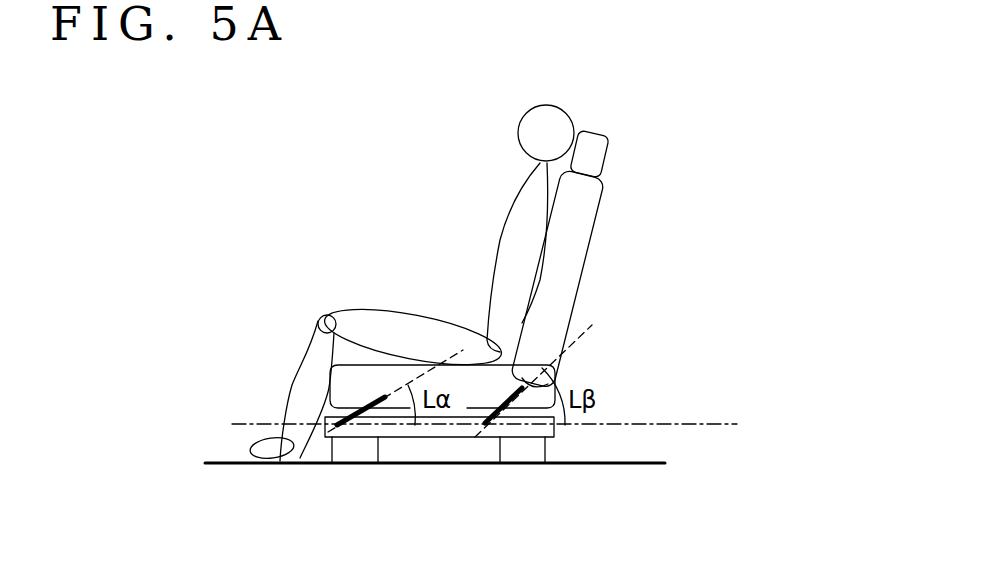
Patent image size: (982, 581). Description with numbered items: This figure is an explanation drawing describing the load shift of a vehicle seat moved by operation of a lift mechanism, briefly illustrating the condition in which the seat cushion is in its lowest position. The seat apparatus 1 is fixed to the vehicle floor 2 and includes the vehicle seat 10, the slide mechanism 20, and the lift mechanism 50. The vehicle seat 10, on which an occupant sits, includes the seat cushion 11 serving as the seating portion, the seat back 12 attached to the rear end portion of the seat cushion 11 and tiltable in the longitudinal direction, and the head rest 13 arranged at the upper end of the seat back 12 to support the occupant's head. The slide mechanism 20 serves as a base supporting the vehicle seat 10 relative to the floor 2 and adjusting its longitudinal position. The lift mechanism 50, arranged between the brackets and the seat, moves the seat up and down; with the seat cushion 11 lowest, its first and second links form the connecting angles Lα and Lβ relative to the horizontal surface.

The seat apparatus 1 is at (302, 195).
The vehicle floor 2 is at (218, 462).
The vehicle seat 10 is at (643, 259).
The seat cushion 11 is at (533, 415).
The seat back 12 is at (594, 265).
The head rest 13 is at (606, 160).
The slide mechanism 20 is at (567, 440).
The lift mechanism 50 is at (705, 362).